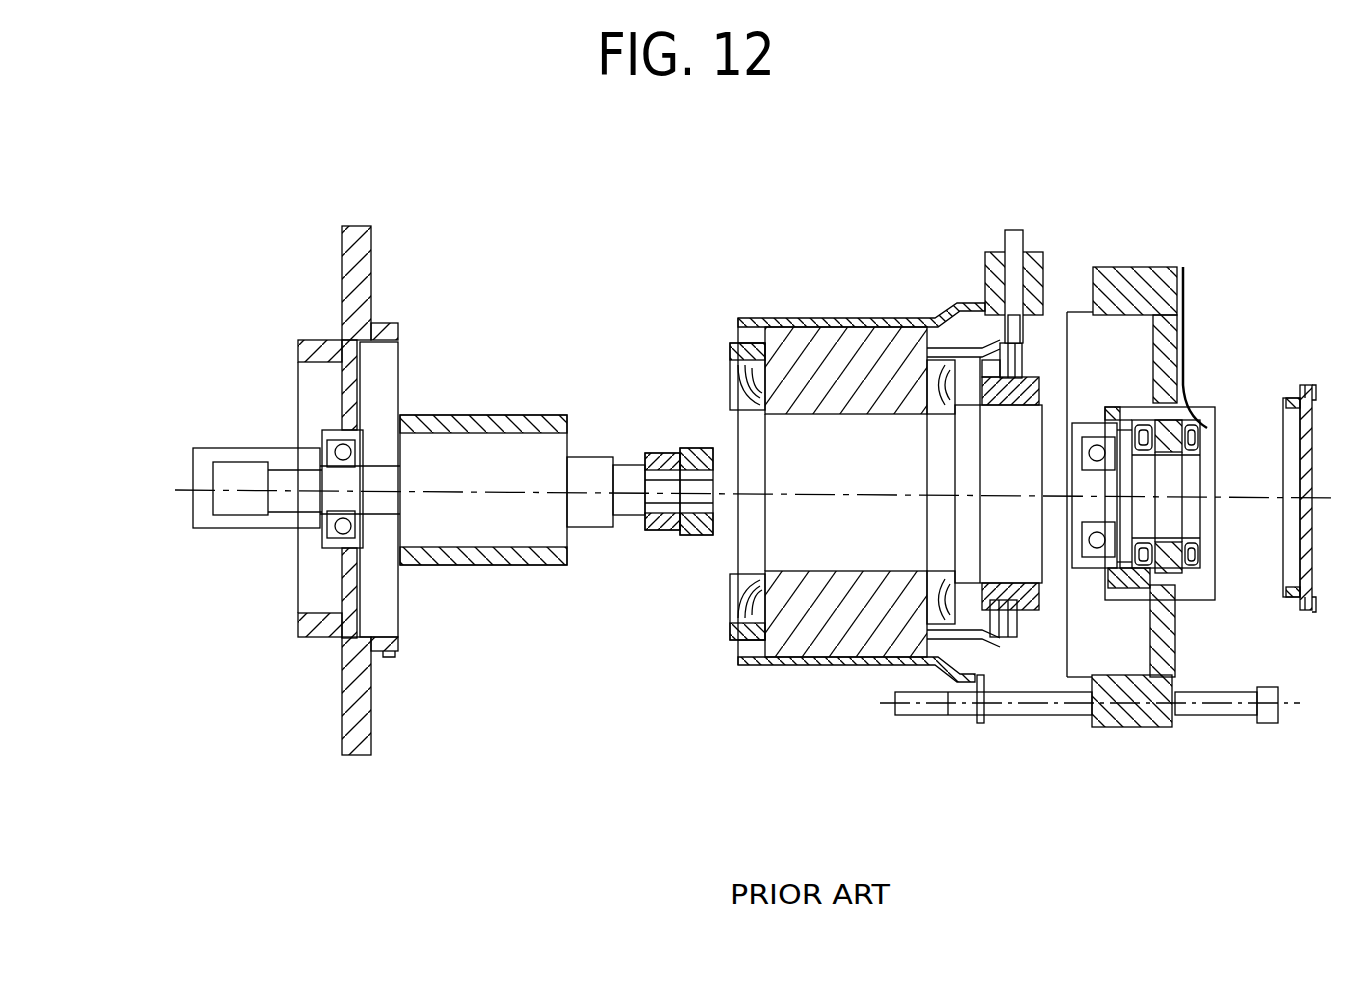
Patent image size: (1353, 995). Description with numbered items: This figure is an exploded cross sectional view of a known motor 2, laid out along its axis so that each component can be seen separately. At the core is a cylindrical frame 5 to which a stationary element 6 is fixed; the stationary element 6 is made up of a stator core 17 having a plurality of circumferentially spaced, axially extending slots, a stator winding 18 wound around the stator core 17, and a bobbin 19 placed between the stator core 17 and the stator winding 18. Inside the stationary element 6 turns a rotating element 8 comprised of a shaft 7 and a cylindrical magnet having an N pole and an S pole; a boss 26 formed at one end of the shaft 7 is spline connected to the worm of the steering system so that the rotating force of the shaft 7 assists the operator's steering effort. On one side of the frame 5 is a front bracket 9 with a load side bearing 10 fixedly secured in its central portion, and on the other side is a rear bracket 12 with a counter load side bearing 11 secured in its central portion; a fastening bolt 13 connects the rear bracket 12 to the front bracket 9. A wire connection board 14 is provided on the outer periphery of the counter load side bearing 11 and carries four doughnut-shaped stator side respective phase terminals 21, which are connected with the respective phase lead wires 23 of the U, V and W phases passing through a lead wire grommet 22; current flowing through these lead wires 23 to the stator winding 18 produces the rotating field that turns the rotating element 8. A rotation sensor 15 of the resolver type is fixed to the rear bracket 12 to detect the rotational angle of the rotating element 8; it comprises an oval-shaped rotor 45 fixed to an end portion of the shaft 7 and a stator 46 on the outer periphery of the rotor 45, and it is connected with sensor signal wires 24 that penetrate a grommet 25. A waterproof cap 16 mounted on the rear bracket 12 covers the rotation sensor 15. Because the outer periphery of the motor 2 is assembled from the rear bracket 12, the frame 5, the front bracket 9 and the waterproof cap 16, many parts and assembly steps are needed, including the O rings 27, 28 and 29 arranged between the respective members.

The motor 2 is at (800, 280).
The frame 5 is at (872, 322).
The stationary element 6 is at (833, 335).
The shaft 7 is at (590, 510).
The rotating element 8 is at (452, 555).
The front bracket 9 is at (360, 267).
The load side bearing 10 is at (362, 430).
The counter load side bearing 11 is at (1097, 563).
The rear bracket 12 is at (1138, 718).
The fastening bolt 13 is at (1050, 715).
The wire connection board 14 is at (1030, 365).
The rotation sensor 15 is at (1175, 572).
The waterproof cap 16 is at (1303, 383).
The stator core 17 is at (892, 340).
The stator winding 18 is at (735, 630).
The bobbin 19 is at (735, 345).
The stator side respective phase terminals 21 is at (1003, 318).
The lead wire grommet 22 is at (1045, 275).
The respective phase lead wires 23 is at (1015, 232).
The sensor signal wires 24 is at (1185, 330).
The grommet 25 is at (1195, 392).
The boss 26 is at (240, 448).
The O ring 27 is at (385, 660).
The O ring 28 is at (990, 690).
The O ring 29 is at (1290, 605).
The rotor 45 is at (693, 520).
The stator 46 is at (1185, 425).